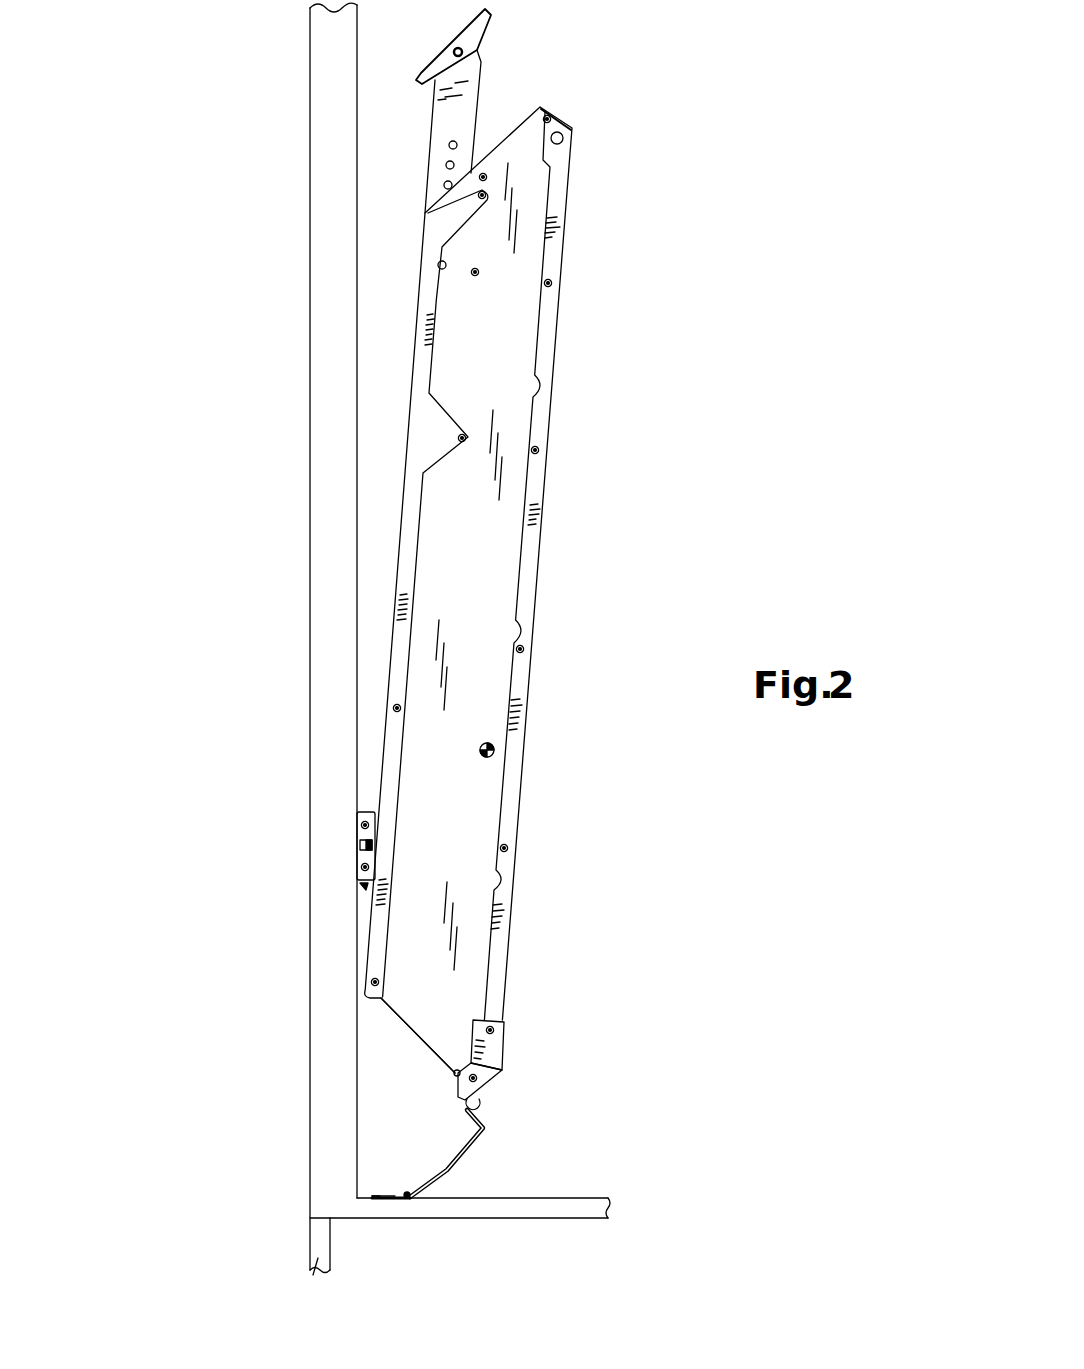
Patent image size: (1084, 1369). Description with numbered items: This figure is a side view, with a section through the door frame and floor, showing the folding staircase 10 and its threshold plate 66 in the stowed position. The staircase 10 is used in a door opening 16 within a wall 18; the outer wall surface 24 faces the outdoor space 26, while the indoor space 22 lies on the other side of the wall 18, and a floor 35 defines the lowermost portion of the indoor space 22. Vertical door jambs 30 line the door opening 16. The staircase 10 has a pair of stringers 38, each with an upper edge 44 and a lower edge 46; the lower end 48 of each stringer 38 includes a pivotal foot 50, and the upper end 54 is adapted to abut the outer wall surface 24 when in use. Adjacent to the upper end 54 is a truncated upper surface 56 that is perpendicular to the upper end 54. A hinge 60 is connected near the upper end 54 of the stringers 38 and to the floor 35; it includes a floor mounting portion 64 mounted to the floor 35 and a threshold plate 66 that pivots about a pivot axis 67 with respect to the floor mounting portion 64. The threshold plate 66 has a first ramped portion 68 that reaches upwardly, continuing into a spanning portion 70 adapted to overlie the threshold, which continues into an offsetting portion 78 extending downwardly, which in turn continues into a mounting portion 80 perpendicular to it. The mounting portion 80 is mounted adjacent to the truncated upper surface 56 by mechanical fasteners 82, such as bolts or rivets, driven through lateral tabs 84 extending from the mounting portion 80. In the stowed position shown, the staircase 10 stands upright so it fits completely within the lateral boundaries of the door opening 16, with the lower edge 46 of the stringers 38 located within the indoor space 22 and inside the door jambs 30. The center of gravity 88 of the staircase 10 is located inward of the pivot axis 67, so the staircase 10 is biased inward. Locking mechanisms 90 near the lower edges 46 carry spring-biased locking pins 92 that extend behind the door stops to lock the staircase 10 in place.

The folding staircase 10 is at (603, 383).
The door opening 16 is at (292, 156).
The wall 18 is at (320, 1258).
The indoor space 22 is at (688, 486).
The outer wall surface 24 is at (310, 1248).
The outdoor space 26 is at (225, 308).
The door jambs 30 is at (330, 387).
The floor 35 is at (583, 1198).
The stringers 38 is at (488, 547).
The upper edge 44 is at (568, 213).
The lower edge 46 is at (397, 562).
The lower end 48 is at (582, 110).
The pivotal foot 50 is at (478, 32).
The upper end 54 is at (397, 1020).
The truncated upper surface 56 is at (458, 1112).
The hinge 60 is at (362, 1184).
The floor mounting portion 64 is at (388, 1198).
The threshold plate 66 is at (454, 1166).
The pivot axis 67 is at (407, 1200).
The first ramped portion 68 is at (440, 1183).
The spanning portion 70 is at (470, 1153).
The offsetting portion 78 is at (482, 1118).
The mounting portion 80 is at (544, 1025).
The mechanical fasteners 82 is at (503, 1020).
The lateral tabs 84 is at (502, 1040).
The center of gravity 88 is at (492, 757).
The locking mechanisms 90 is at (332, 862).
The locking pins 92 is at (360, 843).